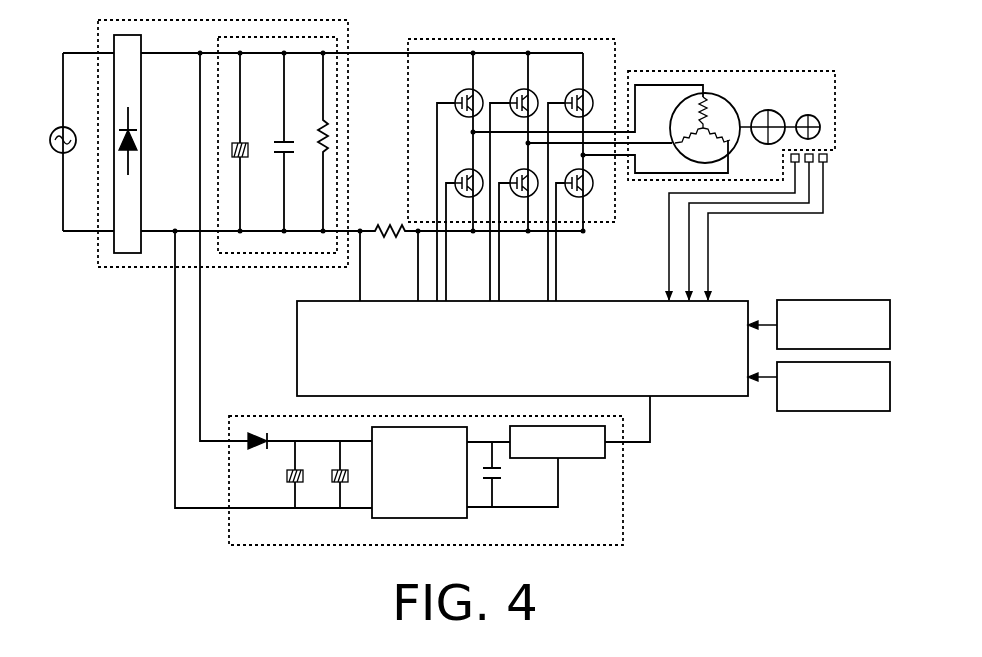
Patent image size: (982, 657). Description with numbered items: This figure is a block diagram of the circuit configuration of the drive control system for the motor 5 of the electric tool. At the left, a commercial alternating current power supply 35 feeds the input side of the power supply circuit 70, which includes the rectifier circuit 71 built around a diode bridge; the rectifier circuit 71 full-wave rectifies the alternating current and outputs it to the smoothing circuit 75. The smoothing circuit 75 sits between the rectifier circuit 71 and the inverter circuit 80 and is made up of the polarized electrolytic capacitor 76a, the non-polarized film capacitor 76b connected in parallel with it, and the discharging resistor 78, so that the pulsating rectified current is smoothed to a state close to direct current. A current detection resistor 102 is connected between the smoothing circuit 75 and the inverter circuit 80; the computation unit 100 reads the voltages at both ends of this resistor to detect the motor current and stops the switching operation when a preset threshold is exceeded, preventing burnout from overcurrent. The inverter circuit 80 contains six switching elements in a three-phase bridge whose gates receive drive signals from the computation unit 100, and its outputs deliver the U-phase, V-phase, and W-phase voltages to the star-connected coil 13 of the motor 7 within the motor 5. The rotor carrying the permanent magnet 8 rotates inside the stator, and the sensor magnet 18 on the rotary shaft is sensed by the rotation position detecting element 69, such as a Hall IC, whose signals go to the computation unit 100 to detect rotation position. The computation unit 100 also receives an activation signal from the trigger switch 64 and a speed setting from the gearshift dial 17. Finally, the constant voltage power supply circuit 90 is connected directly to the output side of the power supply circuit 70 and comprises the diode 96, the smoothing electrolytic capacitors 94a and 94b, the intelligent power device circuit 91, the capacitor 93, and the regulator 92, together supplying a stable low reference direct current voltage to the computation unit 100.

The commercial alternating current power supply 35 is at (58, 153).
The power supply circuit 70 is at (100, 268).
The rectifier circuit 71 is at (130, 253).
The smoothing circuit 75 is at (218, 38).
The electrolytic capacitor 76a is at (244, 163).
The film capacitor 76b is at (288, 163).
The discharging resistor 78 is at (320, 126).
The current detection resistor 102 is at (393, 225).
The inverter circuit 80 is at (607, 39).
The motor 5 is at (780, 71).
The brushless motor 7 is at (727, 107).
The coil 13 is at (733, 141).
The permanent magnet 8 is at (776, 111).
The sensor magnet 18 is at (811, 115).
The rotation position detecting element 69 is at (797, 163).
The computation unit 100 is at (730, 310).
The trigger switch 64 is at (818, 300).
The gearshift dial 17 is at (818, 411).
The constant voltage power supply circuit 90 is at (624, 515).
The diode 96 is at (252, 451).
The electrolytic capacitor 94a is at (343, 483).
The electrolytic capacitor 94b is at (298, 483).
The intelligent power device (IPD) circuit 91 is at (445, 518).
The regulator 92 is at (592, 458).
The capacitor 93 is at (497, 480).